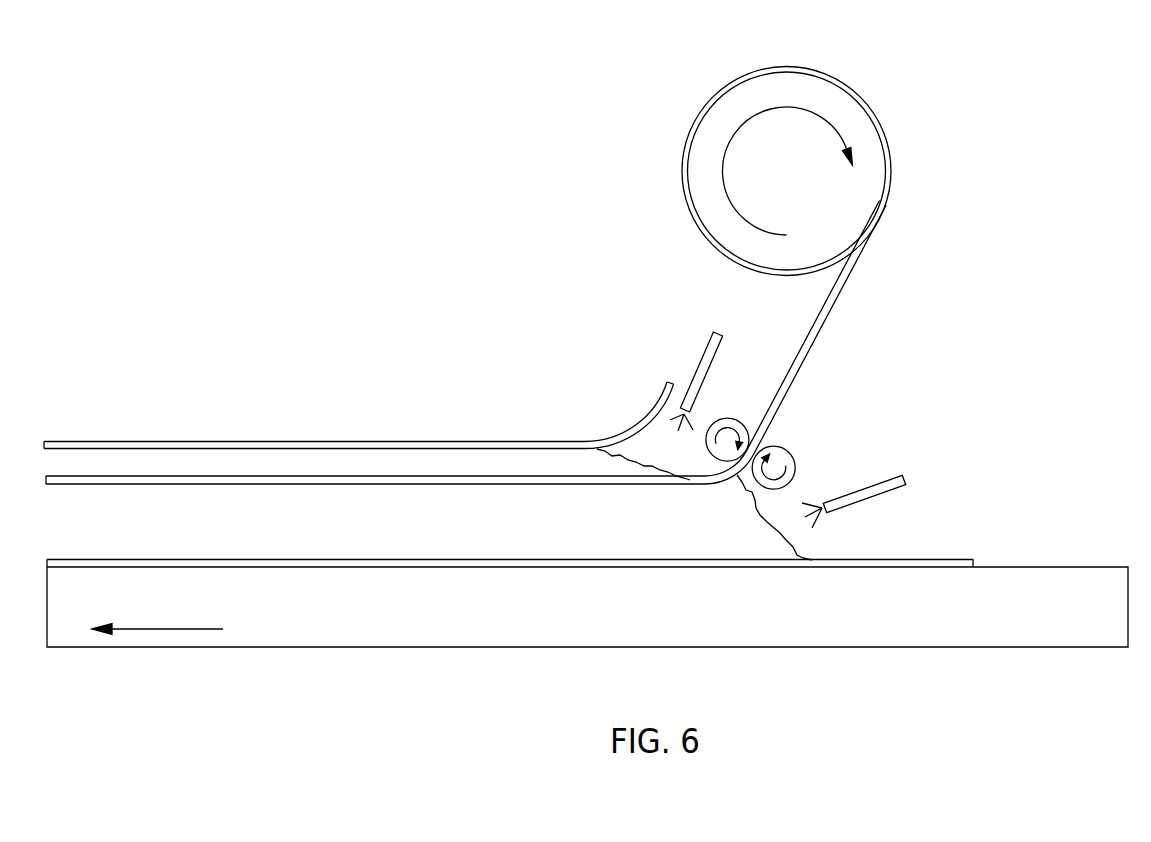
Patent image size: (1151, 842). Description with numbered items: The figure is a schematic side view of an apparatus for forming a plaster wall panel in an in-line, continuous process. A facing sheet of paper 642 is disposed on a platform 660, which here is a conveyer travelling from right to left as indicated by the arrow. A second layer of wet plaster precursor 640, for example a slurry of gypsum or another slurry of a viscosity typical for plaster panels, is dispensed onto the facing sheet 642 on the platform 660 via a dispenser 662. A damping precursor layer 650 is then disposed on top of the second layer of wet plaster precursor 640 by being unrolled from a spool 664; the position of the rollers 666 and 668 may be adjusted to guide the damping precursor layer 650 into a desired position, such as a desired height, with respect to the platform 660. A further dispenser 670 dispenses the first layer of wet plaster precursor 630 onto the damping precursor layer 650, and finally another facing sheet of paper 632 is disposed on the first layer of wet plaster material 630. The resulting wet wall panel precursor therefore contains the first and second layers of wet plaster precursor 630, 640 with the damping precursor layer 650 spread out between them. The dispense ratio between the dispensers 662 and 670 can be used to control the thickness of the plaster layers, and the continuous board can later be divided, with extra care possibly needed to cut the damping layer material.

The spool 664 is at (807, 186).
The roller 668 is at (737, 418).
The roller 666 is at (790, 450).
The dispenser 670 is at (703, 353).
The dispenser 662 is at (882, 478).
The facing sheet of paper 632 is at (263, 445).
The first layer of wet plaster precursor 630 is at (343, 460).
The damping precursor layer 650 is at (480, 477).
The platform 660 is at (317, 626).
The facing sheet of paper 642 is at (462, 563).
The second layer of wet plaster precursor 640 is at (677, 533).